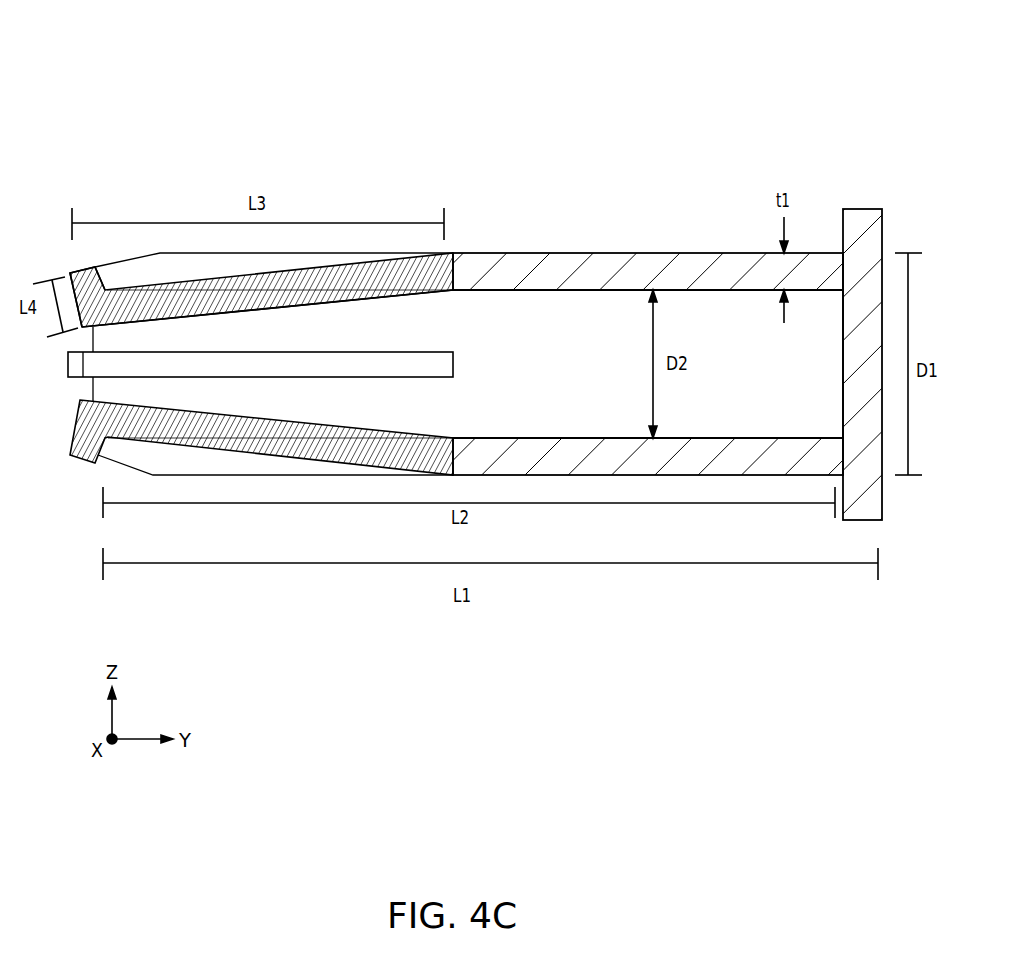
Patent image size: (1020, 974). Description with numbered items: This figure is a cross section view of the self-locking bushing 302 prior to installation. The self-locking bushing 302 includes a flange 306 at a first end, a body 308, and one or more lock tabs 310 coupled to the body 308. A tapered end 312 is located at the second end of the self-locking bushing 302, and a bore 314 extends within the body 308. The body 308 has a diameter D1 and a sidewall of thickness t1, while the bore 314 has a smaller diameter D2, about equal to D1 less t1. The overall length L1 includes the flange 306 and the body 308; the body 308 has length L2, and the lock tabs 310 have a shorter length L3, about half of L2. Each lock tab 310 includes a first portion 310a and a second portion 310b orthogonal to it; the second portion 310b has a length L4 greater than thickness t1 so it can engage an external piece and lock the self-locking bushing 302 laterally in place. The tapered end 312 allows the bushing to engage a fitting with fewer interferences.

The self-locking bushing 302 is at (126, 120).
The flange 306 is at (866, 216).
The body 308 is at (636, 255).
The lock tab 310 is at (404, 260).
The first portion 310a is at (230, 303).
The second portion 310b is at (82, 277).
The tapered end 312 is at (120, 457).
The bore 314 is at (537, 351).